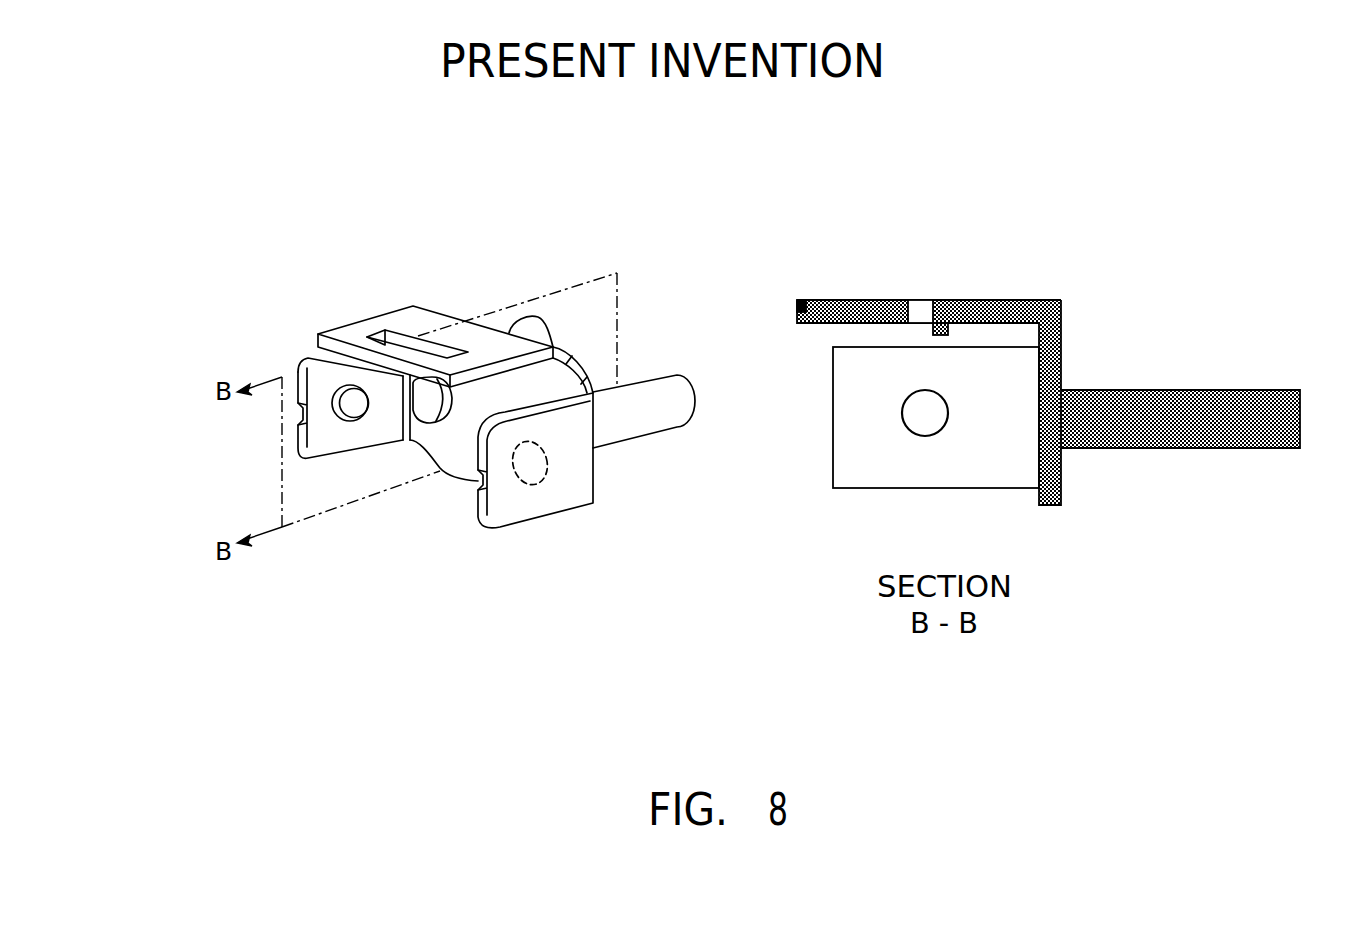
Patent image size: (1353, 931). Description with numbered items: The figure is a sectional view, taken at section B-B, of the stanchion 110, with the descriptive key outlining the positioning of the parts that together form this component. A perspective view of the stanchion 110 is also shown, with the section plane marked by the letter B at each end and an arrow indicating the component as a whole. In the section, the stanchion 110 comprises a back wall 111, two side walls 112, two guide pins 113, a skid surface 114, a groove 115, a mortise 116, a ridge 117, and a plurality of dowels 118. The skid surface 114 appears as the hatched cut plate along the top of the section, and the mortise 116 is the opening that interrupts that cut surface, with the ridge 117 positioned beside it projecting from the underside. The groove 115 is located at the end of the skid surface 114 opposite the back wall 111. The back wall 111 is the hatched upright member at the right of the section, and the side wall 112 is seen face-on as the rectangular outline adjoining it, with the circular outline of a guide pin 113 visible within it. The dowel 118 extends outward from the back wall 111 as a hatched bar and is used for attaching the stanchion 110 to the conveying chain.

The stanchion 110 is at (298, 327).
The back wall 111 is at (1050, 467).
The side wall 112 is at (858, 393).
The guide pin 113 is at (917, 427).
The skid surface 114 is at (859, 297).
The groove 115 is at (802, 307).
The mortise 116 is at (921, 309).
The ridge 117 is at (938, 289).
The dowel 118 is at (1143, 397).